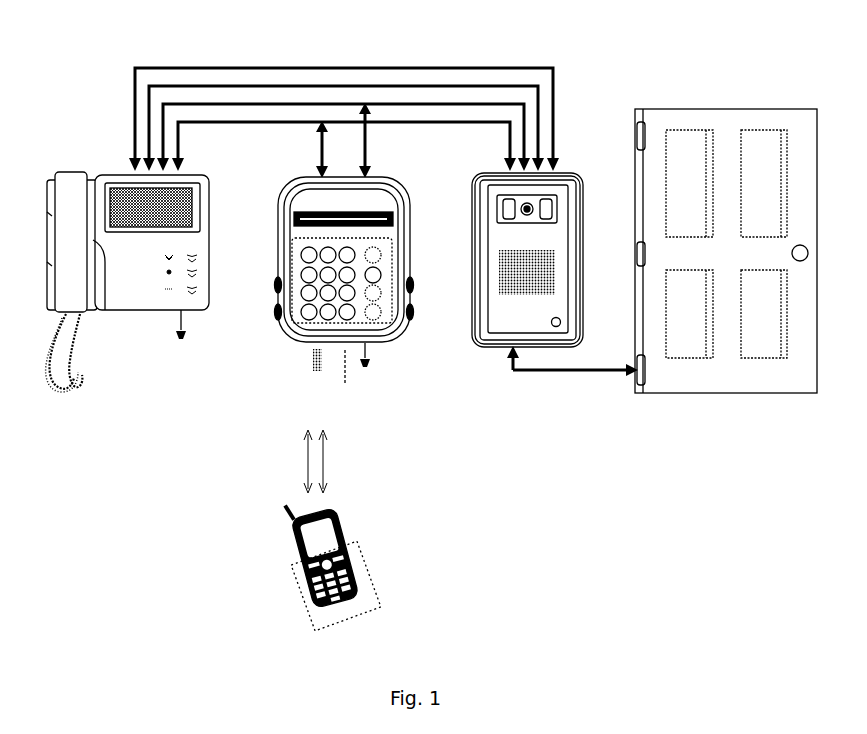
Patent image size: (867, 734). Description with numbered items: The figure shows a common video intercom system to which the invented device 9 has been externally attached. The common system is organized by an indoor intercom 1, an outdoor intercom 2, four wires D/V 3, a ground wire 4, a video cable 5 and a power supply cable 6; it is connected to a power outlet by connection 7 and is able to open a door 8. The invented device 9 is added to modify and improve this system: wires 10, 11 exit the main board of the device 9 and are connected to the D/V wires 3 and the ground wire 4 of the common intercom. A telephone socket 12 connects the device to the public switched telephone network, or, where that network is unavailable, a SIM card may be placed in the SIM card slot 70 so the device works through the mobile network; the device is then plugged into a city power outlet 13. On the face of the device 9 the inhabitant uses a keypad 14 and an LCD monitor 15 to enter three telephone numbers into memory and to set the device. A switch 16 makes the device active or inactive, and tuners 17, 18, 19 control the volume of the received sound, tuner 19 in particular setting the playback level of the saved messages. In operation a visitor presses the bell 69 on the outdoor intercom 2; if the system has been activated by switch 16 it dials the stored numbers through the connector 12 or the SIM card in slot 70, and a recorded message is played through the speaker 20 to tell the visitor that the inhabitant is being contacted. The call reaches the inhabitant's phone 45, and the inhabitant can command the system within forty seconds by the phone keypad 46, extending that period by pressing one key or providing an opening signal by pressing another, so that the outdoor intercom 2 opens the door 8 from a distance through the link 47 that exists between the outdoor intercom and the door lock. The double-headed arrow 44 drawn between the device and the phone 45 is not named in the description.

The indoor intercom 1 is at (47, 195).
The outdoor intercom 2 is at (477, 348).
The four wires D/V 3 is at (181, 146).
The ground wire 4 is at (281, 103).
The video cable 5 is at (266, 85).
The power supply cable 6 is at (557, 141).
The power outlet connection 7 is at (186, 340).
The door 8 is at (683, 110).
The invented device 9 is at (287, 343).
The wire 10 is at (318, 157).
The wire 11 is at (369, 157).
The telephone socket 12 is at (303, 361).
The city power outlet 13 is at (376, 361).
The keypad 14 is at (291, 278).
The LCD monitor 15 is at (400, 223).
The switch 16 is at (413, 312).
The tuner 17 is at (275, 285).
The tuner 18 is at (275, 312).
The tuner 19 is at (413, 287).
The speaker 20 is at (560, 250).
The wireless connection 44 is at (293, 455).
The inhabitant's phone 45 is at (291, 546).
The keypad 46 is at (291, 582).
The link 47 is at (536, 373).
The bell 69 is at (560, 320).
The SIM card slot 70 is at (345, 379).